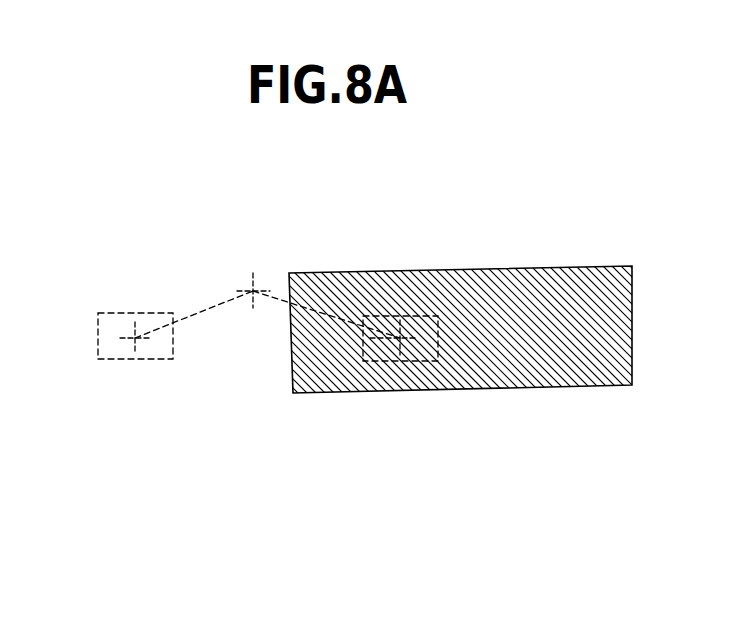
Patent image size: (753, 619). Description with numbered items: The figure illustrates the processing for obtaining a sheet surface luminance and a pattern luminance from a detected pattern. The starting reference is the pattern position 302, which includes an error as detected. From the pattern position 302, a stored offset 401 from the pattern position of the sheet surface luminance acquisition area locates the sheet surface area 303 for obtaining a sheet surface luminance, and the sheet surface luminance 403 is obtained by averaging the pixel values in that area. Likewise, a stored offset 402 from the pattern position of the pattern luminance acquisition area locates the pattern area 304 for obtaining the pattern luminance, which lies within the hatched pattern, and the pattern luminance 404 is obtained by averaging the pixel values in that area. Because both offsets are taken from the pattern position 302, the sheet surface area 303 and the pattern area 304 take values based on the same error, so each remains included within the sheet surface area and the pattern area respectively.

The pattern position 302 is at (253, 291).
The sheet surface area for obtaining a sheet surface luminance 303 is at (153, 360).
The pattern area for obtaining the pattern luminance 304 is at (402, 362).
The offset from the pattern position of the sheet surface luminance acquisition area 401 is at (205, 312).
The offset from the pattern position of the pattern luminance acquisition area 402 is at (327, 312).
The sheet surface luminance 403 is at (117, 333).
The pattern luminance 404 is at (400, 338).